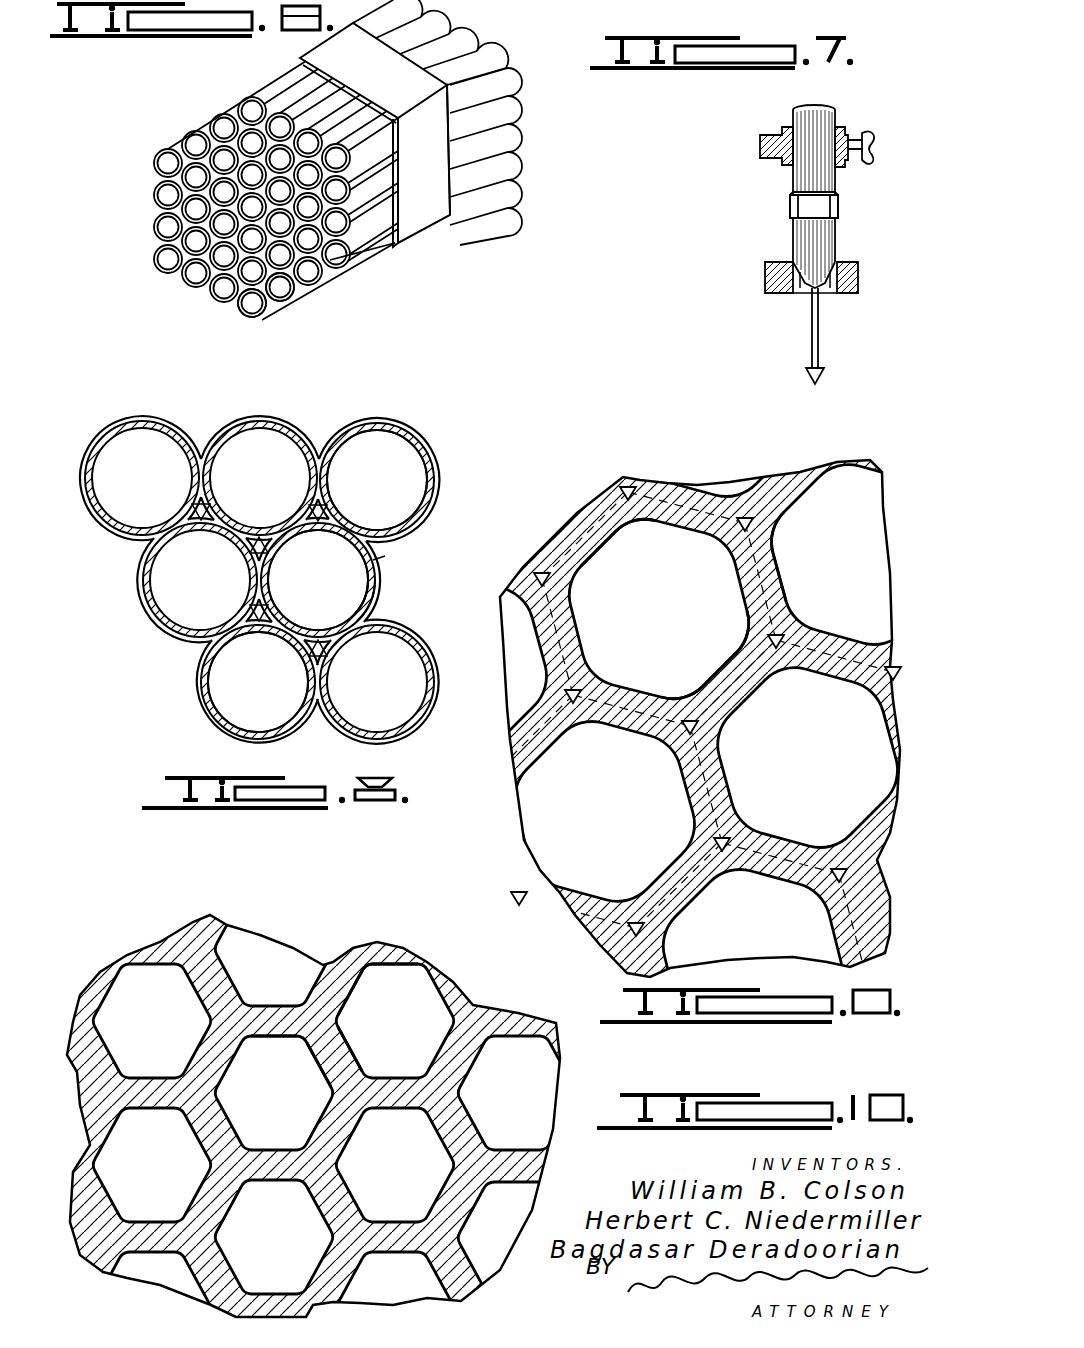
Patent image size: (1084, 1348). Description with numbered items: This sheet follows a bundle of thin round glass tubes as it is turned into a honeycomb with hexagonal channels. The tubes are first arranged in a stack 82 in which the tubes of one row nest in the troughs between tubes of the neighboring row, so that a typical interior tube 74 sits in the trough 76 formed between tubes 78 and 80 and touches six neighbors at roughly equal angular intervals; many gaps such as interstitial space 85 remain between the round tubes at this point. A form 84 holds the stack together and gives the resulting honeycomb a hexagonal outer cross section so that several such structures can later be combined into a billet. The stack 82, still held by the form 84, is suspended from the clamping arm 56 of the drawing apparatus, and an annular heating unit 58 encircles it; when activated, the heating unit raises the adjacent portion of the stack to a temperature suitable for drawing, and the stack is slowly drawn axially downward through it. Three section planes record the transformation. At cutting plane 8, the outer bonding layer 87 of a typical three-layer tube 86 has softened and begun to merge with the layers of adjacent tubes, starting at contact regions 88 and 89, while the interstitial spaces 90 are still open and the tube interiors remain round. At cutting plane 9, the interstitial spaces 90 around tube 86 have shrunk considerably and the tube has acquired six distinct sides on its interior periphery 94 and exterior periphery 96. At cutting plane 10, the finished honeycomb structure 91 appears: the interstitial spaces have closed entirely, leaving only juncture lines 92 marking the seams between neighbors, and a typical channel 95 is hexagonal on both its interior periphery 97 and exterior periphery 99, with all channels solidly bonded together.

In FIG. 6, the tube 74 is at (300, 265).
In FIG. 6, the trough 76 is at (372, 252).
In FIG. 6, the tube 78 is at (295, 303).
In FIG. 6, the tube 80 is at (352, 250).
In FIG. 6, the form 84 is at (437, 200).
In FIG. 7, the form 84 is at (838, 200).
In FIG. 6, the interstitial space 85 is at (243, 307).
In FIG. 6, the outer bonding layer 87 is at (138, 275).
In FIG. 8, the outer bonding layer 87 is at (385, 562).
In FIG. 9, the outer bonding layer 87 is at (500, 845).
In FIG. 7, the clamping arm 56 is at (762, 143).
In FIG. 7, the stack 82 is at (840, 180).
In FIG. 8, the stack 82 is at (437, 524).
In FIG. 7, the annular heating unit 58 is at (860, 260).
In FIG. 7, the cutting plane 8— 8 is at (887, 267).
In FIG. 7, the cutting plane 9— 9 is at (832, 307).
In FIG. 7, the cutting plane 10— 10 is at (832, 340).
In FIG. 8, the tube 86 is at (392, 553).
In FIG. 9, the tube 86 is at (753, 583).
In FIG. 8, the contact region 88 is at (382, 580).
In FIG. 8, the contact region 89 is at (248, 640).
In FIG. 8, the interstitial space 90 is at (376, 533).
In FIG. 9, the interstitial space 90 is at (700, 552).
In FIG. 9, the interior periphery 94 is at (587, 550).
In FIG. 9, the exterior periphery 96 is at (683, 498).
In FIG. 10, the honeycomb structure 91 is at (546, 1198).
In FIG. 10, the juncture line 92 is at (327, 990).
In FIG. 10, the channel 95 is at (300, 1072).
In FIG. 10, the interior periphery 97 is at (340, 1055).
In FIG. 10, the exterior periphery 99 is at (274, 1064).